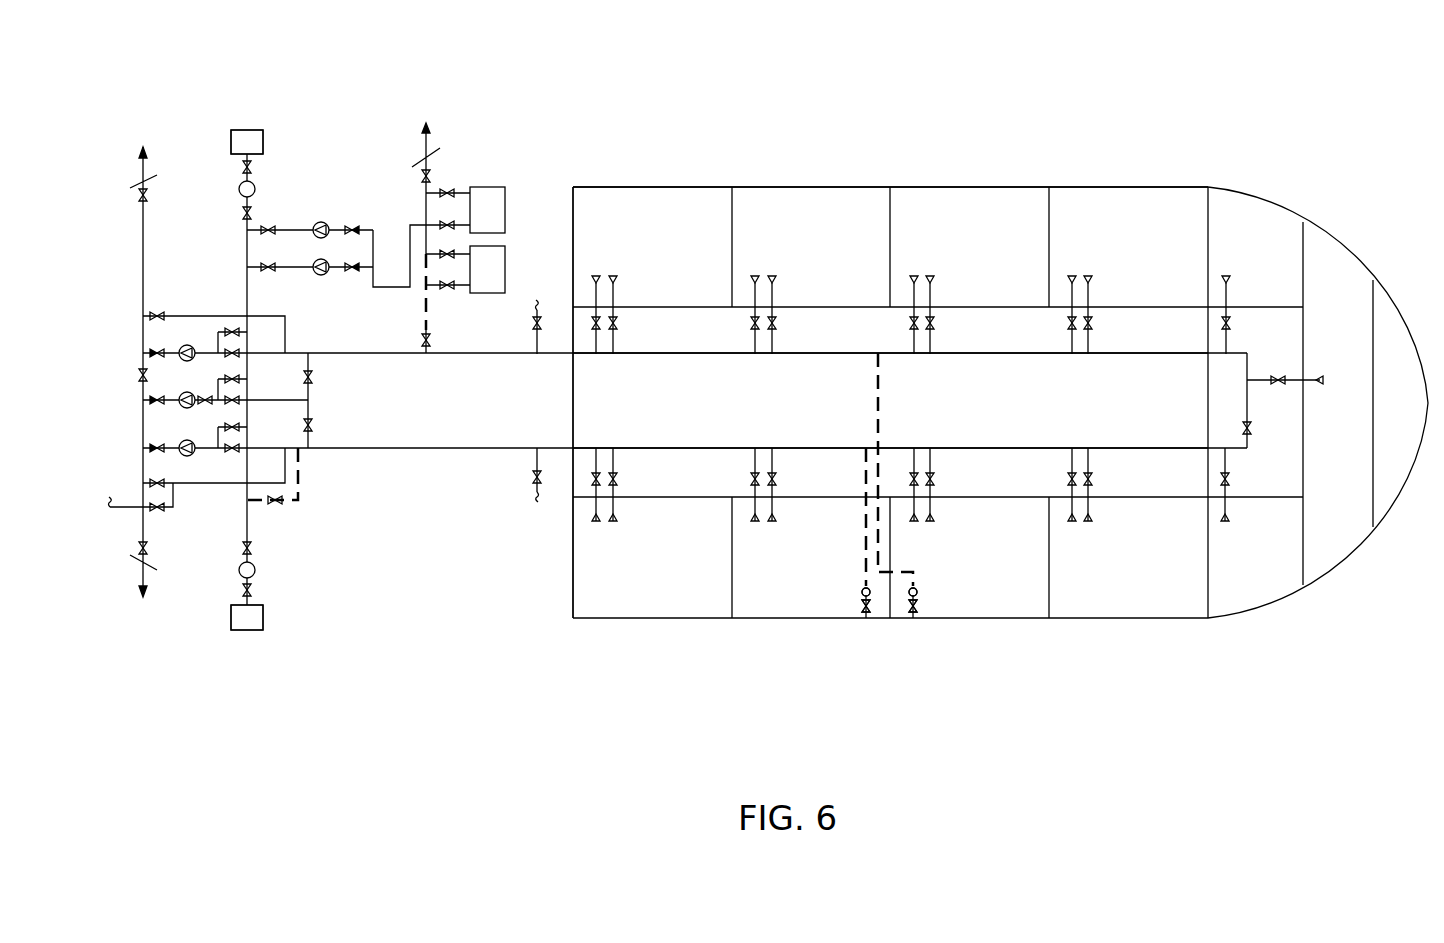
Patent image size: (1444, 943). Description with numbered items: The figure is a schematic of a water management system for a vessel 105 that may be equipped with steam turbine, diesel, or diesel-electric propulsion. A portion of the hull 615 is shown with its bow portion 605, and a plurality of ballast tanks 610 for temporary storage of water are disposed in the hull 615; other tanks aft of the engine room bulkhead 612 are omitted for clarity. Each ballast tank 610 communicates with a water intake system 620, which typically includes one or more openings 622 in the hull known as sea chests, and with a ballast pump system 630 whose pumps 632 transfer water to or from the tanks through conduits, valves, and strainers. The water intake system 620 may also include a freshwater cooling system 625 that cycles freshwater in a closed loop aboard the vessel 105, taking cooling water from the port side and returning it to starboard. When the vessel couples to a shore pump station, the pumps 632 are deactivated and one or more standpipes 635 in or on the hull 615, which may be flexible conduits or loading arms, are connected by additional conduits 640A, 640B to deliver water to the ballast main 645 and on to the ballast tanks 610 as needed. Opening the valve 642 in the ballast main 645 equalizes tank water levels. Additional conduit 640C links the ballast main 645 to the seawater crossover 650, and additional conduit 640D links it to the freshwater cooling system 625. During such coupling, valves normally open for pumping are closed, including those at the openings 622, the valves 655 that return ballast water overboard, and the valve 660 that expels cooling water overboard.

The vessel 105 is at (1245, 82).
The bow portion 605 is at (1332, 238).
The ballast tanks 610 is at (965, 402).
The engine room bulkhead 612 is at (573, 225).
The hull 615 is at (647, 187).
The water intake system 620 is at (250, 121).
The openings 622 is at (263, 142).
The freshwater cooling system 625 is at (488, 158).
The ballast pump system 630 is at (363, 403).
The pumps 632 is at (182, 442).
The standpipes 635 is at (866, 618).
The additional conduit 640A is at (864, 471).
The additional conduit 640B is at (879, 390).
The additional conduit 640C is at (298, 505).
The additional conduit 640D is at (426, 326).
The valve 642 is at (1254, 428).
The ballast main 645 is at (665, 356).
The seawater crossover 650 is at (247, 286).
The valves 655 is at (152, 185).
The valve 660 is at (432, 170).